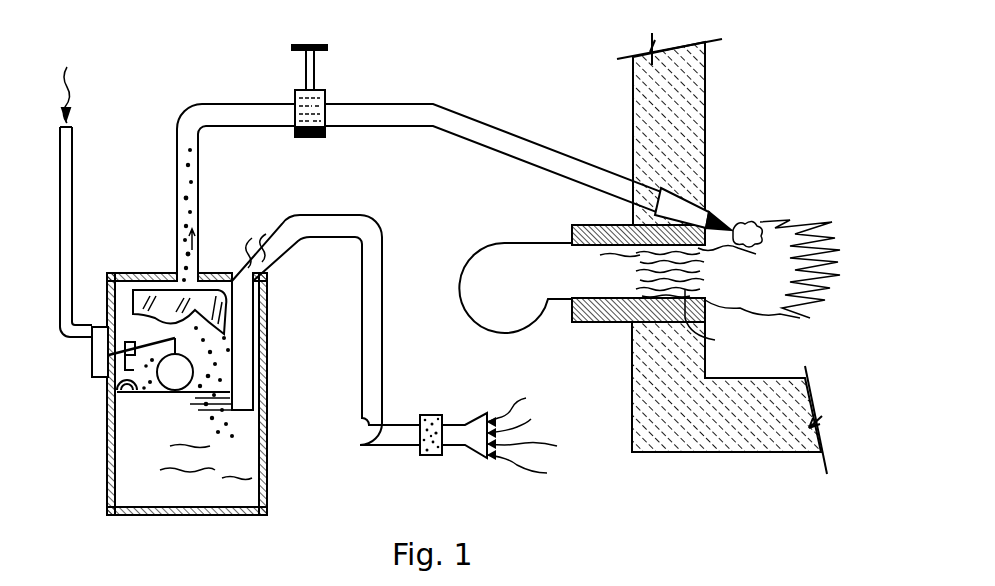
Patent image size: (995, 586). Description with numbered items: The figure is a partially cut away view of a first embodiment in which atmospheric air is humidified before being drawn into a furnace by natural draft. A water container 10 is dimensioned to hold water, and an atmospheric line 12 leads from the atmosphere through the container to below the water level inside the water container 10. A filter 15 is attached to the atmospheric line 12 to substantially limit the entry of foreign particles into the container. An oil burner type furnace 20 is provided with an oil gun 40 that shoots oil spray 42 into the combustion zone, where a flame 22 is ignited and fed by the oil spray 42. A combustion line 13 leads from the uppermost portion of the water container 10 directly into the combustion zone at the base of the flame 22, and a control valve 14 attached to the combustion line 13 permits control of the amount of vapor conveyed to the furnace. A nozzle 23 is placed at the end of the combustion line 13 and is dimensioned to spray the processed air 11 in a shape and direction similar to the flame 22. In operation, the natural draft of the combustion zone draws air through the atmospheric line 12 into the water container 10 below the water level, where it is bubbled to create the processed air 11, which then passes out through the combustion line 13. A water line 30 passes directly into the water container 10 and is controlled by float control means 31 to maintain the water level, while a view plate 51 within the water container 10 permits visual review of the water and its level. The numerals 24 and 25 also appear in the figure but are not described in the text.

The water container 10 is at (107, 468).
The processed air 11 is at (190, 262).
The atmospheric line 12 is at (383, 263).
The combustion line 13 is at (203, 100).
The control valve 14 is at (325, 102).
The filter 15 is at (428, 457).
The oil burner type furnace 20 is at (650, 118).
The flame 22 is at (781, 324).
The nozzle 23 is at (700, 190).
The ignition flame 24 is at (720, 224).
The baffle 25 is at (243, 385).
The water line 30 is at (72, 208).
The float control means 31 is at (183, 373).
The oil gun 40 is at (610, 268).
The oil spray 42 is at (659, 324).
The view plate 51 is at (203, 310).